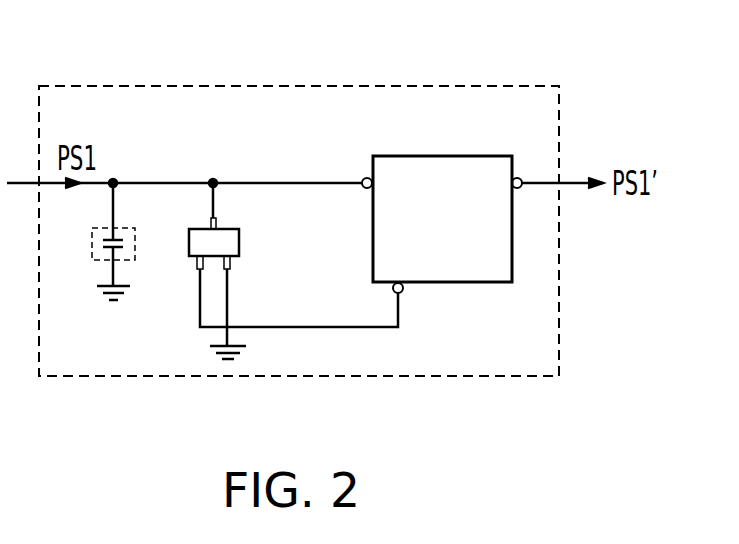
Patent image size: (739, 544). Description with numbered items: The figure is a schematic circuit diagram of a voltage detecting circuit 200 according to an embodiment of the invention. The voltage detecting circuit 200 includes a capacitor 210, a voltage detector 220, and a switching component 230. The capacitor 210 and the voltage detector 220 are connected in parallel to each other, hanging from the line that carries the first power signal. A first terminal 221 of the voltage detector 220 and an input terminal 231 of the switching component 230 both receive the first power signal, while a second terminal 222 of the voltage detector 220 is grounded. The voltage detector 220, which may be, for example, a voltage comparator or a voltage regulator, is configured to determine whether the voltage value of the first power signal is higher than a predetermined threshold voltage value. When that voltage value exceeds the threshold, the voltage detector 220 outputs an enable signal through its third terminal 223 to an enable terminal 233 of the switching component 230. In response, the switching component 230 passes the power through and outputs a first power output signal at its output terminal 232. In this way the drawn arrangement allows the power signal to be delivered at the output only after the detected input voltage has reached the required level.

The voltage detecting circuit 200 is at (385, 87).
The capacitor 210 is at (136, 247).
The voltage detector 220 is at (240, 241).
The first terminal 221 is at (218, 223).
The second terminal 222 is at (232, 265).
The third terminal 223 is at (190, 258).
The switching component 230 is at (450, 155).
The input terminal 231 is at (364, 179).
The output terminal 232 is at (519, 178).
The enable terminal 233 is at (403, 291).